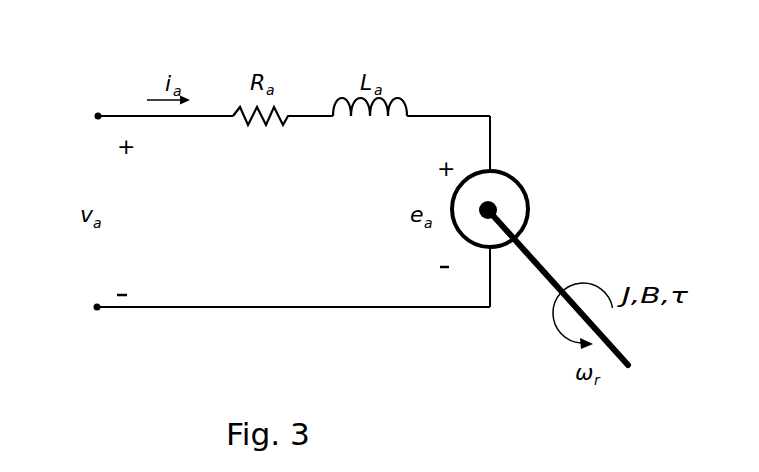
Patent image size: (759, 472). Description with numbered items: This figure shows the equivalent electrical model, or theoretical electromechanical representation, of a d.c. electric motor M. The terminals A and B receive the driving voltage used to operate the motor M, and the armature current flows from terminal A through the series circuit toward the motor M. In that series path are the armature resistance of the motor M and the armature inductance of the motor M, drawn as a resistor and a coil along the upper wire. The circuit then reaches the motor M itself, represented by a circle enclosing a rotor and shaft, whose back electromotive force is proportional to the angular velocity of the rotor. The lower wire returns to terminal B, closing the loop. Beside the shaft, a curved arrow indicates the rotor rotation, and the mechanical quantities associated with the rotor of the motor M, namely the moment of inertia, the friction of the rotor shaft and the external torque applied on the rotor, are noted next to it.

The electric motor M is at (528, 105).
The terminal A is at (88, 102).
The terminal B is at (89, 294).